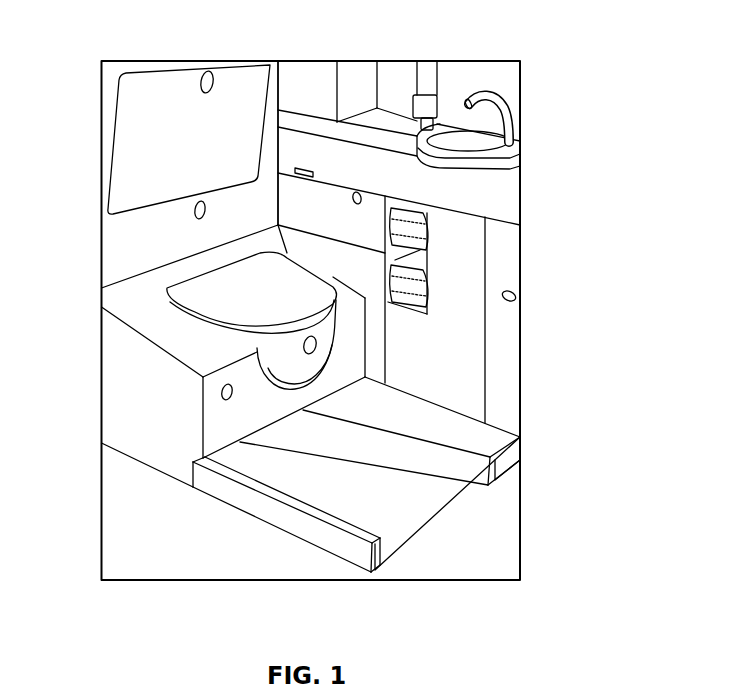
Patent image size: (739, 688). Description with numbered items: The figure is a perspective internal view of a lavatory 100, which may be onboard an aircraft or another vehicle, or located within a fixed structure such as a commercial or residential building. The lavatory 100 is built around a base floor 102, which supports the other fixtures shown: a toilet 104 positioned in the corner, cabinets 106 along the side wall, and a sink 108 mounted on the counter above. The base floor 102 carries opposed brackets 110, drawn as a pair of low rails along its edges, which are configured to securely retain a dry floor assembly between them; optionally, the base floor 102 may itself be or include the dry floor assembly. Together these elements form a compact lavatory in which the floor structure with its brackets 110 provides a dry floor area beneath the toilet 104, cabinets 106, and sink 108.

The lavatory 100 is at (124, 54).
The base floor 102 is at (357, 548).
The toilet 104 is at (230, 288).
The cabinets 106 is at (504, 265).
The sink 108 is at (465, 140).
The opposed brackets 110 is at (512, 465).